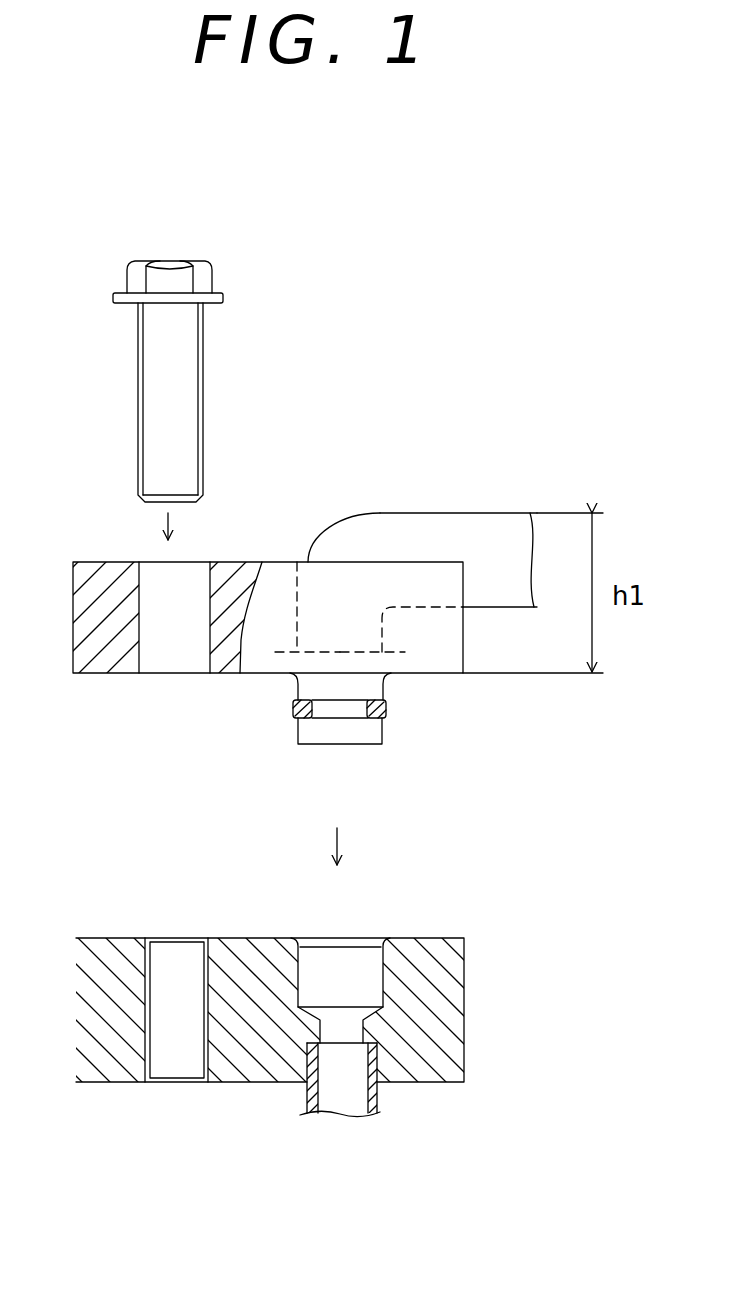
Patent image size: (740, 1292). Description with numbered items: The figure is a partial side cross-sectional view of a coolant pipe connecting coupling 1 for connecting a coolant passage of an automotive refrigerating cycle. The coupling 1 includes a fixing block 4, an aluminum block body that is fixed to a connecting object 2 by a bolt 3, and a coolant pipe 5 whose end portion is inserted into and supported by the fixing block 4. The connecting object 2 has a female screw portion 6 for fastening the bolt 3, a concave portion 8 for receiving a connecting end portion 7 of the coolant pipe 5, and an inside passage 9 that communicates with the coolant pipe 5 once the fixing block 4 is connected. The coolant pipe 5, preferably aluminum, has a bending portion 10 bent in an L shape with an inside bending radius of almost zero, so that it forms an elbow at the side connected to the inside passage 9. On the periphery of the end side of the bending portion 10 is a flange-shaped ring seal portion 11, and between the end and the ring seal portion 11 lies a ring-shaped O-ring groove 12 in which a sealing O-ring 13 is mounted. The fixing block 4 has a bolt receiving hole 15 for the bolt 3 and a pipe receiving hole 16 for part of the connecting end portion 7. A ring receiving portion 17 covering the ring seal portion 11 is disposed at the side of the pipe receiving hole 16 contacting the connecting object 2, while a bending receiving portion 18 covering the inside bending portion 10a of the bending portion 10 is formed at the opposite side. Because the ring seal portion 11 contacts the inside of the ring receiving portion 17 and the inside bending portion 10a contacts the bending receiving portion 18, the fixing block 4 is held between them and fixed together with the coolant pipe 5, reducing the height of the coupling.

The coolant pipe connecting coupling 1 is at (322, 477).
The connecting object 2 is at (440, 975).
The bolt 3 is at (168, 277).
The fixing block 4 is at (93, 610).
The coolant pipe 5 is at (498, 512).
The female screw portion 6 is at (157, 958).
The connecting end portion 7 is at (353, 745).
The concave portion 8 is at (380, 977).
The inside passage 9 is at (357, 1033).
The bending portion 10 is at (378, 544).
The inside bending portion 10a is at (413, 608).
The ring seal portion 11 is at (272, 658).
The O-ring groove 12 is at (332, 712).
The O-ring 13 is at (293, 713).
The bolt receiving hole 15 is at (148, 643).
The pipe receiving hole 16 is at (300, 562).
The ring receiving portion 17 is at (405, 657).
The bending receiving portion 18 is at (422, 580).